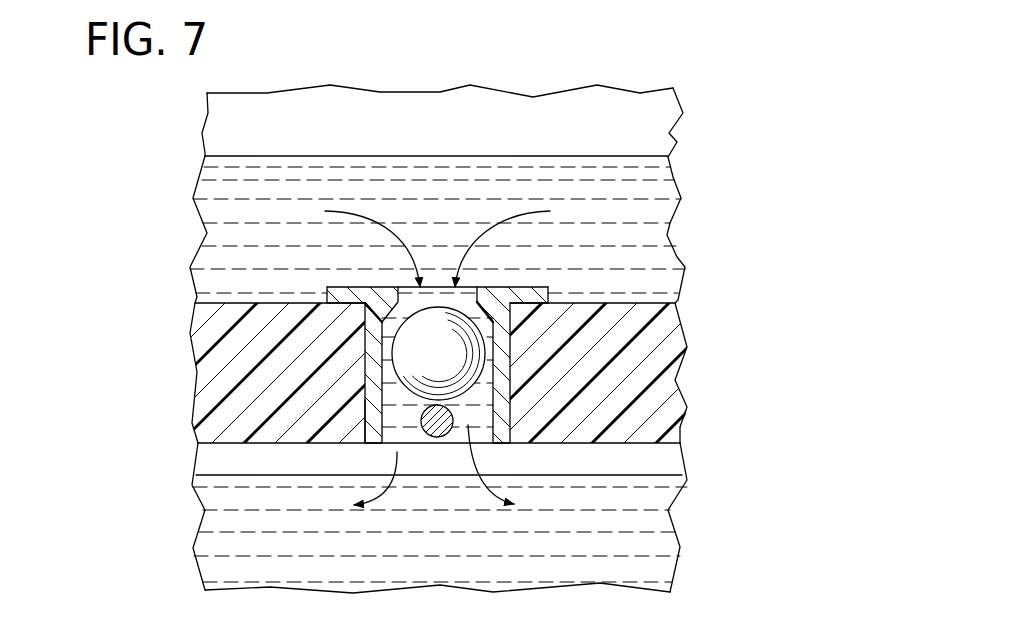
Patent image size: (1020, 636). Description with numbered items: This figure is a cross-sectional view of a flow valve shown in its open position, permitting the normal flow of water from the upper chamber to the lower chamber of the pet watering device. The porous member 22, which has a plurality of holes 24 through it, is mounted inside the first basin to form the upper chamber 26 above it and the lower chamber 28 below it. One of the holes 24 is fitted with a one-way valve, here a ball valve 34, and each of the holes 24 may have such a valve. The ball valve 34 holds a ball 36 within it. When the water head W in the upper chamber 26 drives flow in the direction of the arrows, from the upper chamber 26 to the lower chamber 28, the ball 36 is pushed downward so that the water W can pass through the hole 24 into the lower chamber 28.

The porous member 22 is at (225, 372).
The holes 24 is at (368, 408).
The upper chamber 26 is at (448, 132).
The lower chamber 28 is at (540, 568).
The ball valve 34 is at (501, 287).
The ball 36 is at (448, 361).
The water W is at (284, 258).